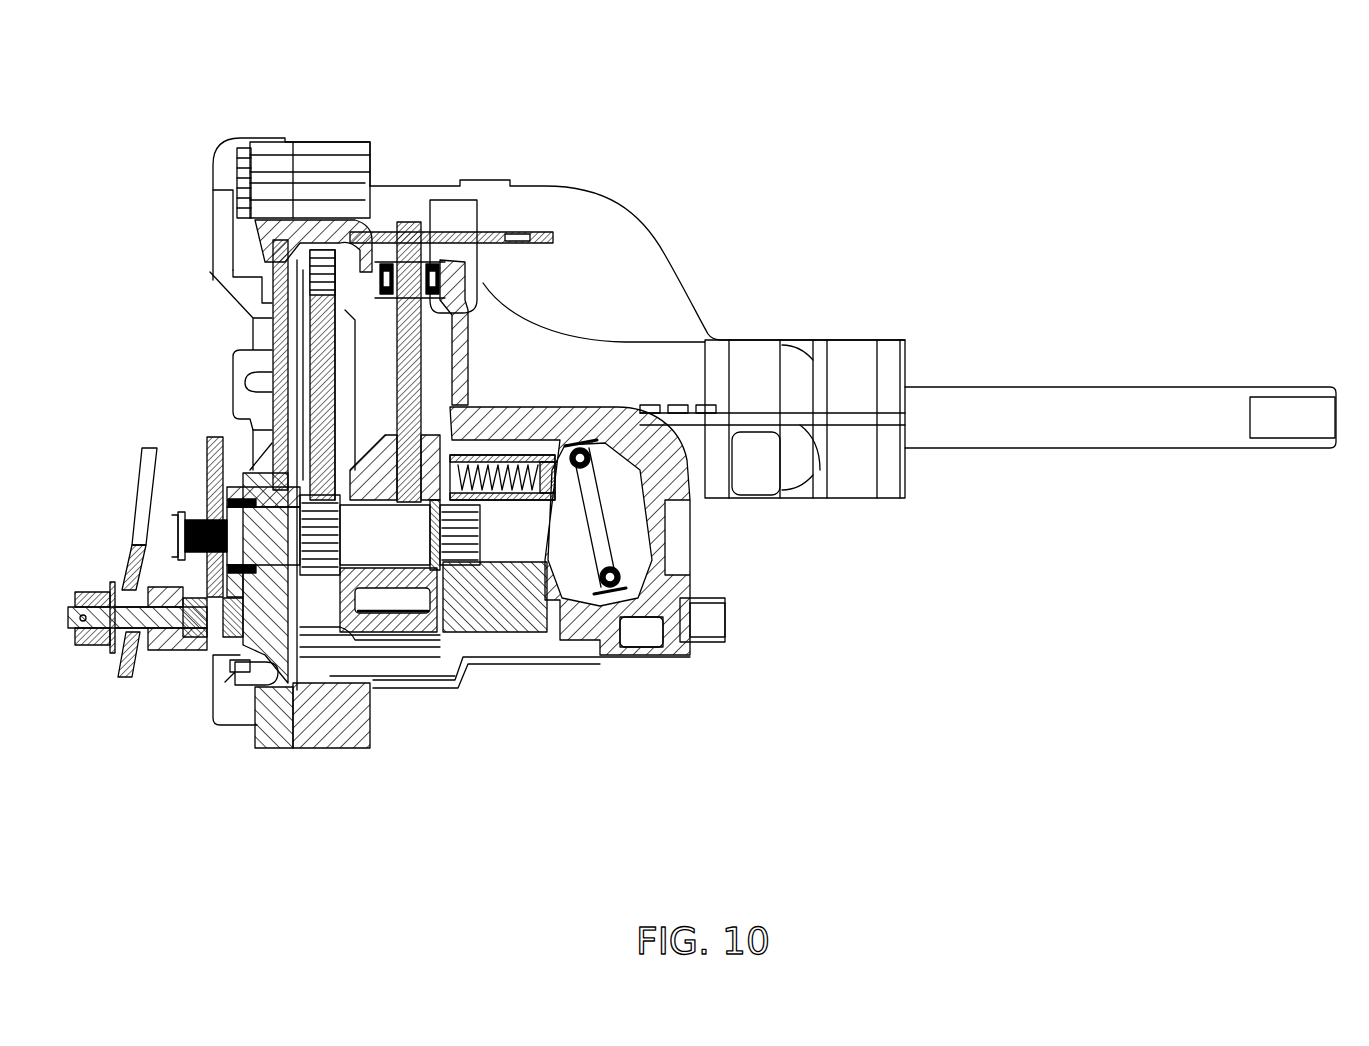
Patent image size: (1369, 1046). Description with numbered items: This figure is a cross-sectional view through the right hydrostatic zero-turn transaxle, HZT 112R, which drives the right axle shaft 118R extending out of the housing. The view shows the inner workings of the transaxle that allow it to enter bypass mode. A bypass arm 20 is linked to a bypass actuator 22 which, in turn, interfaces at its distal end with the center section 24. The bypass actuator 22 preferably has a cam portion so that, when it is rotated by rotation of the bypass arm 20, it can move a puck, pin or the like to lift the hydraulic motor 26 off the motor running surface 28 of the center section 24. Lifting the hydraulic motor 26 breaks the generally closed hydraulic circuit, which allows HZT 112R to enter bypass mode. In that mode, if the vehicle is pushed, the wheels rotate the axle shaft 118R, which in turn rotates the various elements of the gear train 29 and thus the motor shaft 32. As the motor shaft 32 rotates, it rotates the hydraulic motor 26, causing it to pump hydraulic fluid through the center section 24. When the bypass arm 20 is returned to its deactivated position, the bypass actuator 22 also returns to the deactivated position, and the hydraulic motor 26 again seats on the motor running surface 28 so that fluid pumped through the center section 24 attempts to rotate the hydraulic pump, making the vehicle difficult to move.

The bypass arm 20 is at (545, 245).
The bypass actuator 22 is at (430, 326).
The gear train 29 is at (366, 385).
The motor shaft 32 is at (398, 551).
The center section 24 is at (405, 634).
The motor running surface 28 is at (478, 630).
The hydraulic motor 26 is at (517, 646).
The HZT 112R is at (938, 143).
The axle shaft 118R is at (1115, 388).